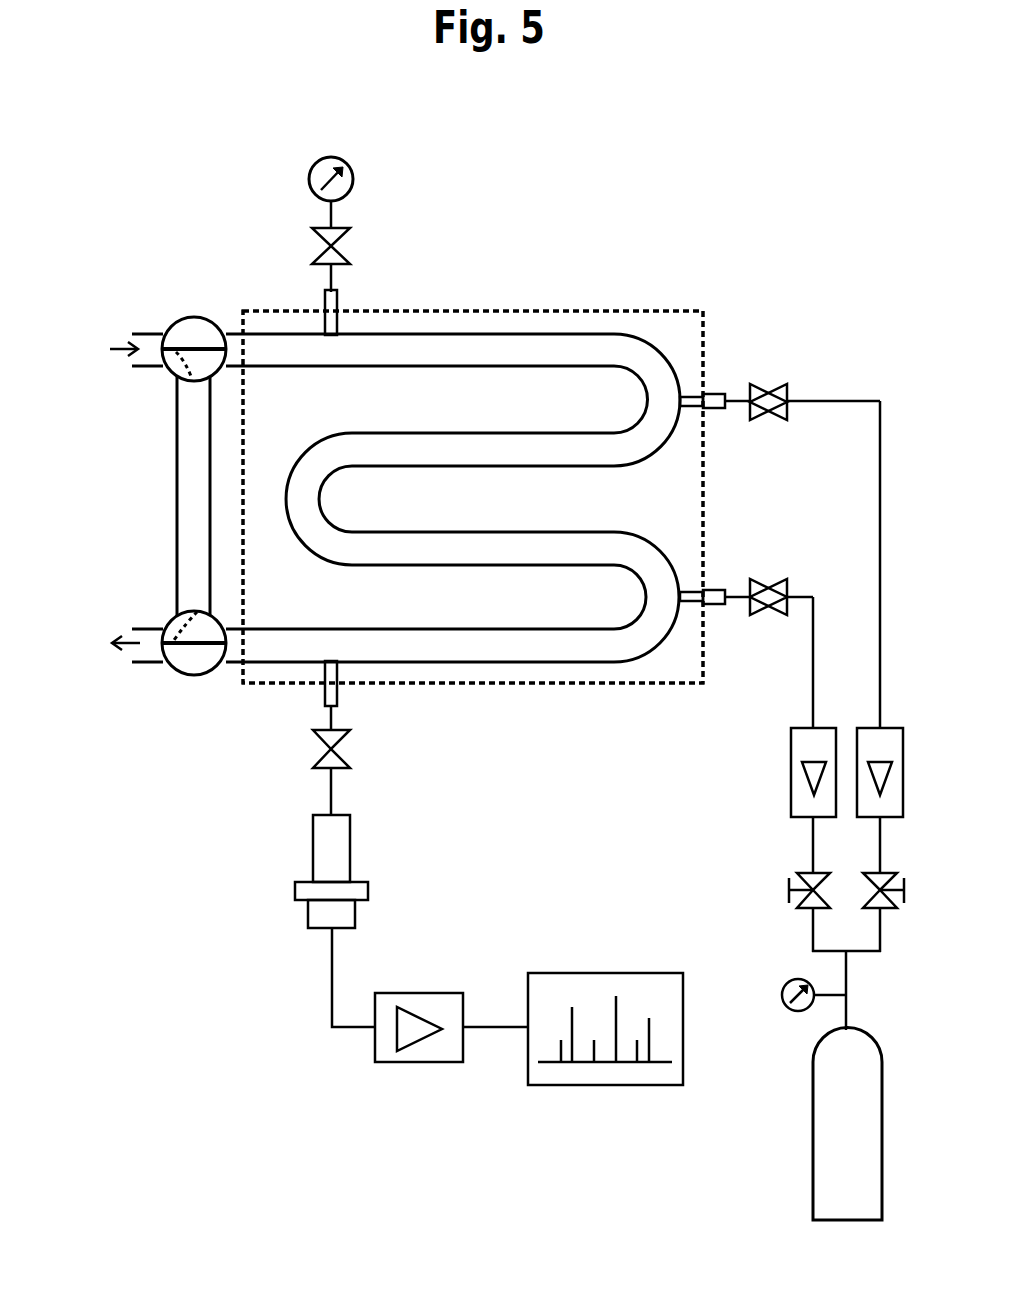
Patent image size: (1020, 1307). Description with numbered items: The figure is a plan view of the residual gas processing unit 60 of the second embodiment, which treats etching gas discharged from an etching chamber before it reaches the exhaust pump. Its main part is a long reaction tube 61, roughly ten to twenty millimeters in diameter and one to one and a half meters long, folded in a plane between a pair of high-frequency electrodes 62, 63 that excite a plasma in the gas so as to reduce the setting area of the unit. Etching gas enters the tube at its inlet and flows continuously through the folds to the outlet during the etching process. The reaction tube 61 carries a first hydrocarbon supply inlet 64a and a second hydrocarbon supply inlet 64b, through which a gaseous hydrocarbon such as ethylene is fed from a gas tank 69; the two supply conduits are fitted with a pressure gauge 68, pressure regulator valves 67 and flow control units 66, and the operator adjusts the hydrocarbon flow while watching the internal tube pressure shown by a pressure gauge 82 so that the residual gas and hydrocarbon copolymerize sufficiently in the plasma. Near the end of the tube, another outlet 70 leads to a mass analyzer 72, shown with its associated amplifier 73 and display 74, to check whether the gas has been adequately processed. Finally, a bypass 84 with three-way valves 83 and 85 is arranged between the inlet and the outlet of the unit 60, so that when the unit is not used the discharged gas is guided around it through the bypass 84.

The residual gas processing unit 60 is at (196, 189).
The reaction tube 61 is at (520, 334).
The high-frequency electrode 62 is at (686, 311).
The high-frequency electrode 63 is at (473, 497).
The first hydrocarbon supply inlet 64a is at (716, 406).
The second hydrocarbon supply inlet 64b is at (718, 592).
The flow control unit 66 is at (791, 771).
The pressure regulator valve 67 is at (789, 889).
The pressure gauge 68 is at (786, 984).
The gas tank 69 is at (814, 1125).
The outlet 70 is at (337, 693).
The mass analyzer 72 is at (368, 891).
The amplifier 73 is at (425, 993).
The display / analyzer 74 is at (607, 973).
The pressure gauge 82 is at (353, 179).
The three-way valve 83 is at (173, 375).
The bypass 84 is at (192, 491).
The three-way valve 85 is at (168, 621).